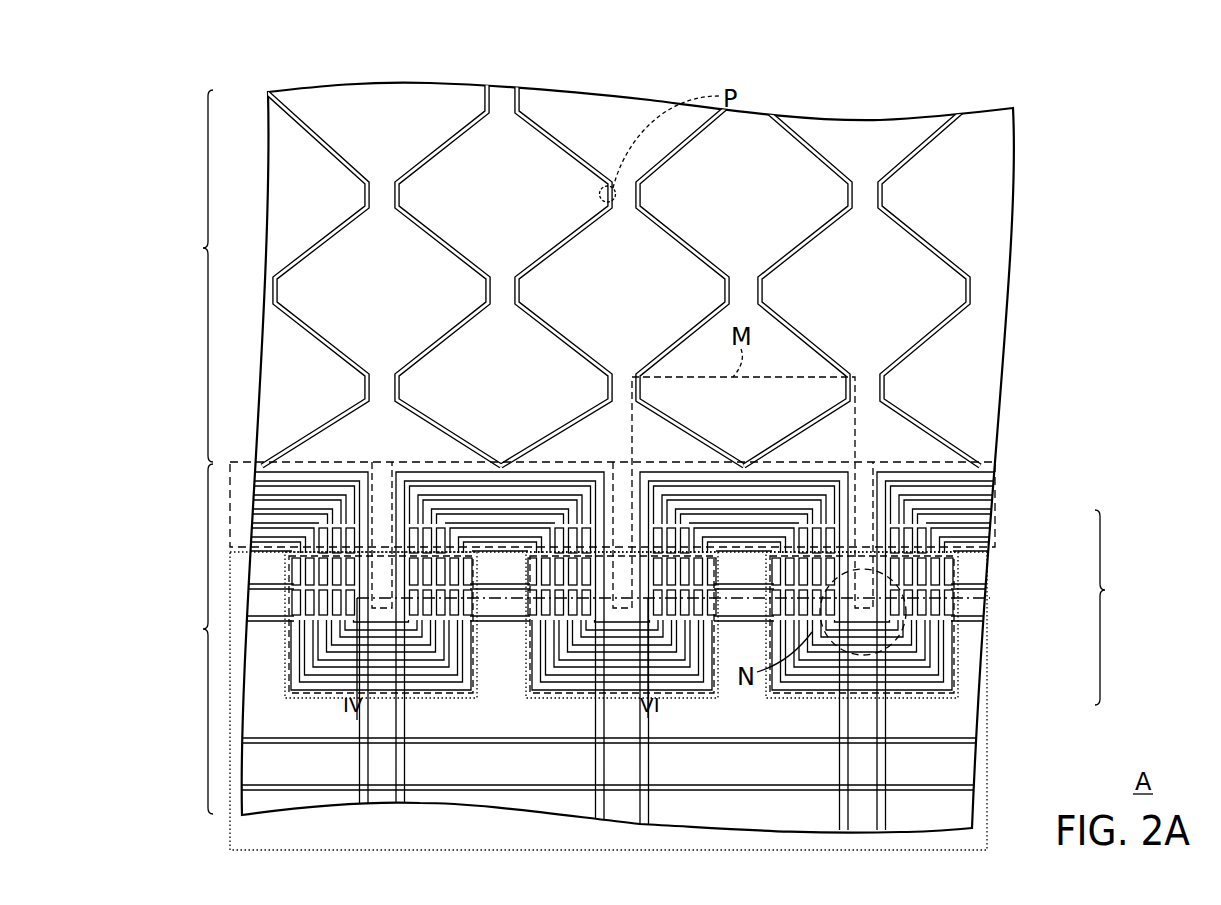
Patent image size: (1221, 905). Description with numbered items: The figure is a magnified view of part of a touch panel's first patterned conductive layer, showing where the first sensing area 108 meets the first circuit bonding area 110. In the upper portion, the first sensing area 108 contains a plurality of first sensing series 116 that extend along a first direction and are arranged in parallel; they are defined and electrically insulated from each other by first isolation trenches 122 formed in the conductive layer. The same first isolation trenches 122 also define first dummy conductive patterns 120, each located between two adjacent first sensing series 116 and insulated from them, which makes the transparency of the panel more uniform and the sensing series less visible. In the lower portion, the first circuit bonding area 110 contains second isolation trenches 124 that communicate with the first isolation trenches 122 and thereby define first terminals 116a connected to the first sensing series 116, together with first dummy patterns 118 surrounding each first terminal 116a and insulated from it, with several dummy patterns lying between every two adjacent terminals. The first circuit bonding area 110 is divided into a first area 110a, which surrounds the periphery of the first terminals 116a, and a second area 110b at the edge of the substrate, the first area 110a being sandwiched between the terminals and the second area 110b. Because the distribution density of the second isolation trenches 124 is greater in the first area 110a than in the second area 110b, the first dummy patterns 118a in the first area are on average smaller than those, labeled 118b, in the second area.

The first sensing area 108 is at (192, 276).
The first circuit bonding area 110 is at (587, 639).
The first area 110a is at (233, 462).
The second area 110b is at (229, 830).
The first sensing series 116 is at (832, 312).
The first terminal 116a is at (892, 520).
The first dummy pattern 118 is at (1115, 607).
The first dummy pattern 118a is at (865, 545).
The second capacitor electrode 118b is at (900, 706).
The first dummy conductive pattern 120 is at (720, 211).
The first isolation trench 122 is at (859, 391).
The second isolation trench 124 is at (915, 530).